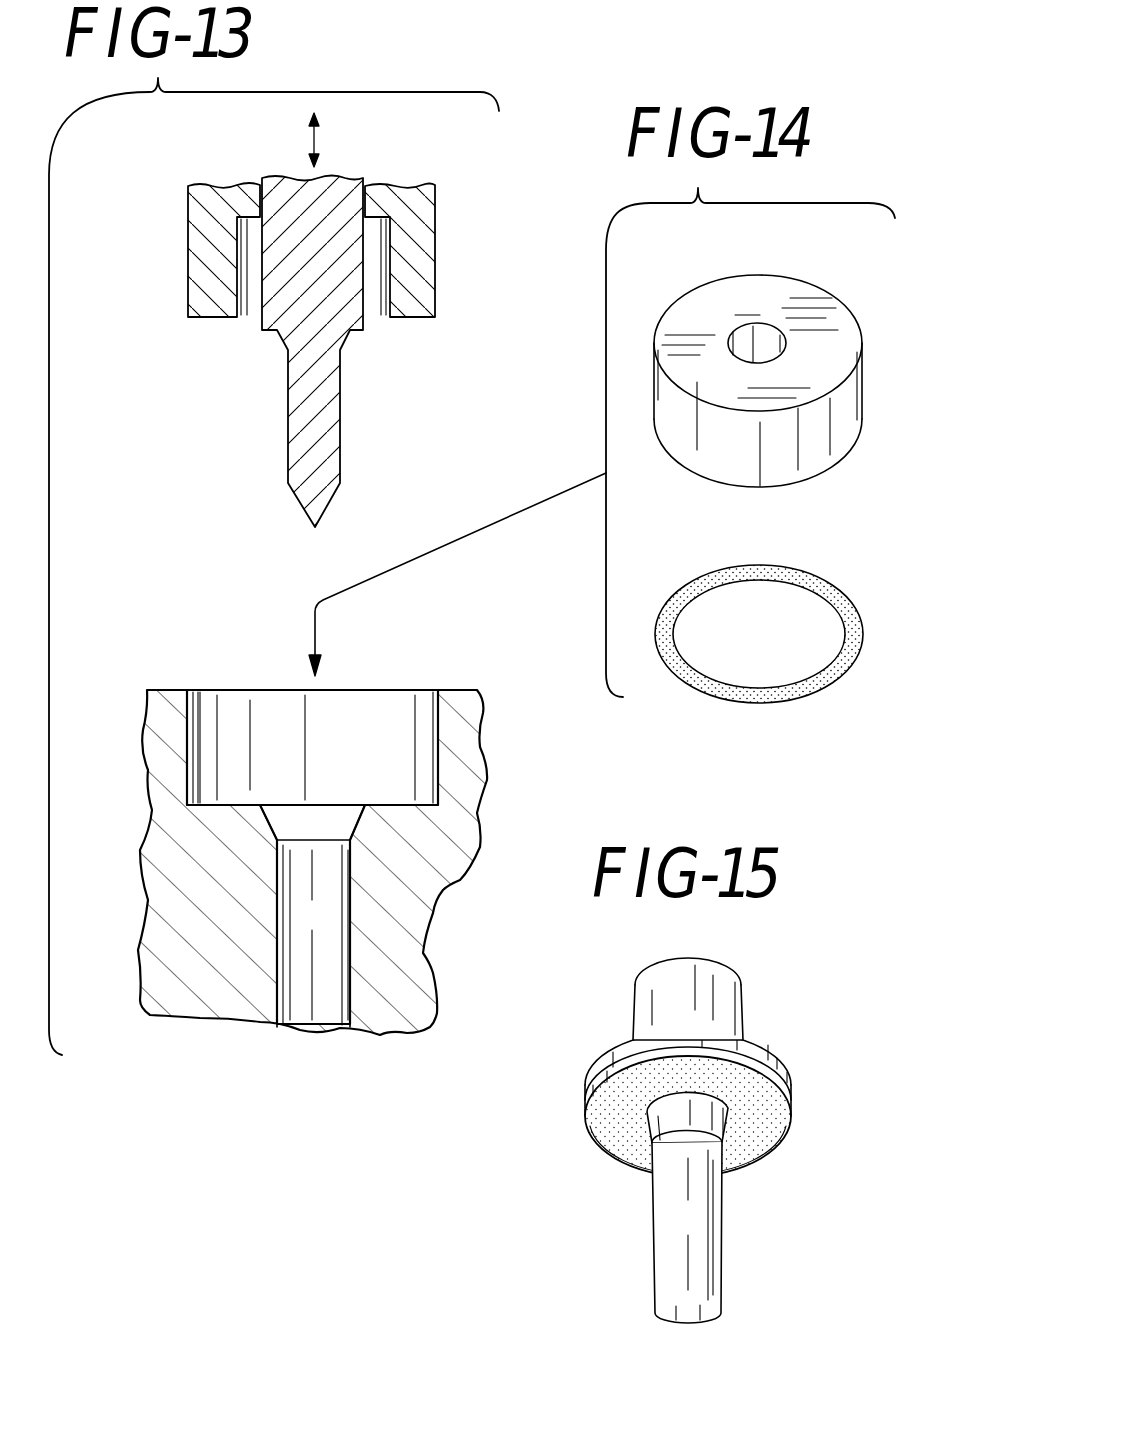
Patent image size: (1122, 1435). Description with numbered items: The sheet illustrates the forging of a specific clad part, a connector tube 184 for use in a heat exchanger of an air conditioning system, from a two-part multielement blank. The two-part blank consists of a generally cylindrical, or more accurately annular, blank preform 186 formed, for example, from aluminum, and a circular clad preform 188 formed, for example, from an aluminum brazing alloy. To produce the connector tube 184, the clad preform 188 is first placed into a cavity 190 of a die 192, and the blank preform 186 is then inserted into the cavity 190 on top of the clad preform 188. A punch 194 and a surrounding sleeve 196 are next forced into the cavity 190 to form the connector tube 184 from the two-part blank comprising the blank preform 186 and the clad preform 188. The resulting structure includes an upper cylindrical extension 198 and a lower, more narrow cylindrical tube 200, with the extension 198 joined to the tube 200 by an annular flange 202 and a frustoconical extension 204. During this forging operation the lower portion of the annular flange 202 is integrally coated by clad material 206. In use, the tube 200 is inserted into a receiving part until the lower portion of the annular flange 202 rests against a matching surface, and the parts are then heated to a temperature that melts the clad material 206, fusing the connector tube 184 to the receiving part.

In FIG. 15, the connector tube 184 is at (637, 1135).
In FIG. 14, the blank preform 186 is at (835, 332).
In FIG. 14, the clad preform 188 is at (827, 583).
In FIG. 13, the cavity 190 is at (301, 832).
In FIG. 13, the die 192 is at (230, 1005).
In FIG. 13, the punch 194 is at (297, 392).
In FIG. 13, the sleeve 196 is at (427, 223).
In FIG. 15, the upper cylindrical extension 198 is at (727, 1005).
In FIG. 15, the cylindrical tube 200 is at (672, 1260).
In FIG. 15, the annular flange 202 is at (773, 1072).
In FIG. 15, the frustoconical extension 204 is at (670, 1118).
In FIG. 15, the clad material 206 is at (767, 1135).